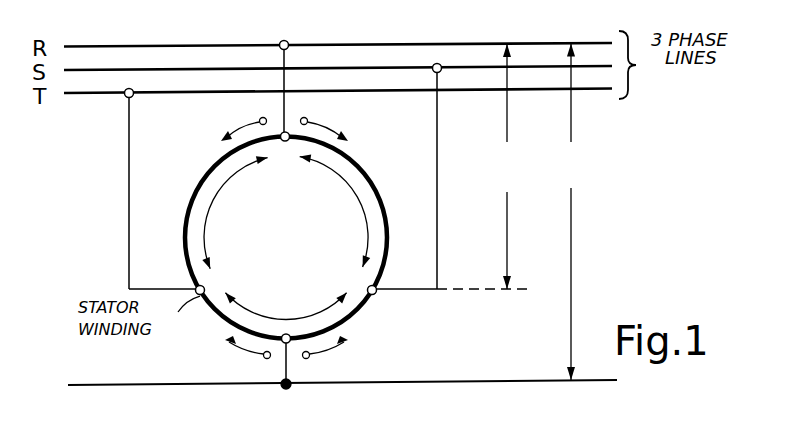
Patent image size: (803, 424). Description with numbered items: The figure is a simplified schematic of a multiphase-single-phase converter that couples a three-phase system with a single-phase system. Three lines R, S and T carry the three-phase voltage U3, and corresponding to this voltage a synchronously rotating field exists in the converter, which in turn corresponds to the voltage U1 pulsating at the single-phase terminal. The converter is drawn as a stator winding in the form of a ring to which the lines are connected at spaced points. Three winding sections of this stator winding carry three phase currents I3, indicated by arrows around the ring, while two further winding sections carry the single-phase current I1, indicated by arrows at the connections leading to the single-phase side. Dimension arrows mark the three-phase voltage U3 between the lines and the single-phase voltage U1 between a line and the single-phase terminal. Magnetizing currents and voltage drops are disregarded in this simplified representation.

The single-phase current I1 is at (284, 240).
The phase current I3 is at (286, 237).
The single-phase voltage U1 is at (569, 212).
The three-phase voltage U3 is at (507, 166).